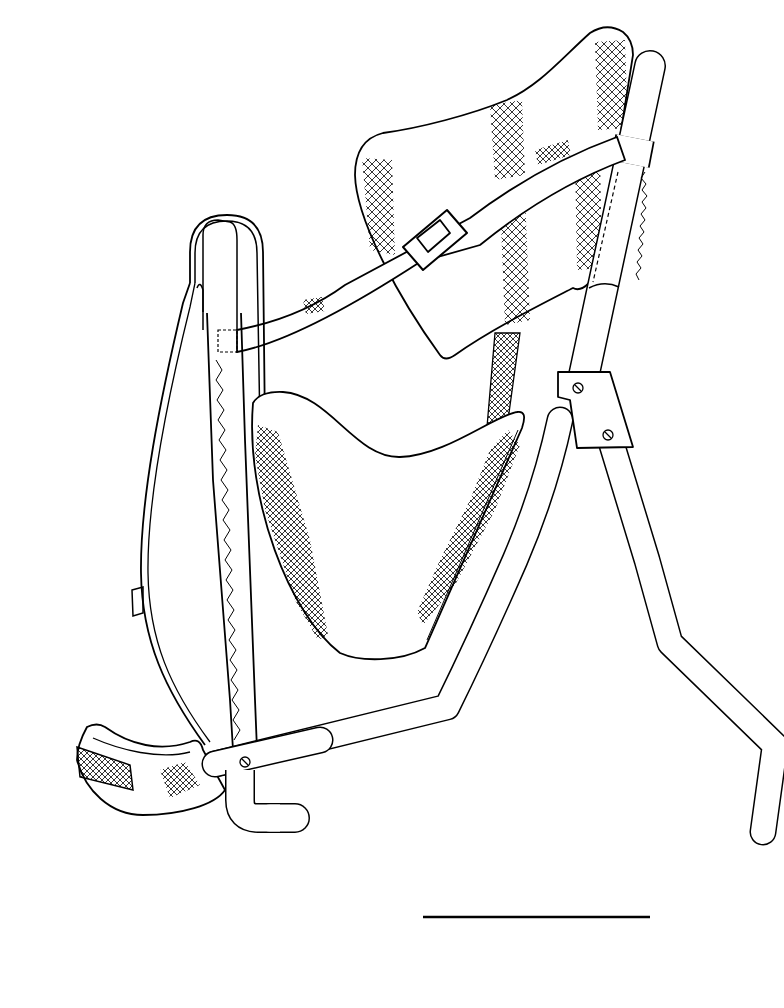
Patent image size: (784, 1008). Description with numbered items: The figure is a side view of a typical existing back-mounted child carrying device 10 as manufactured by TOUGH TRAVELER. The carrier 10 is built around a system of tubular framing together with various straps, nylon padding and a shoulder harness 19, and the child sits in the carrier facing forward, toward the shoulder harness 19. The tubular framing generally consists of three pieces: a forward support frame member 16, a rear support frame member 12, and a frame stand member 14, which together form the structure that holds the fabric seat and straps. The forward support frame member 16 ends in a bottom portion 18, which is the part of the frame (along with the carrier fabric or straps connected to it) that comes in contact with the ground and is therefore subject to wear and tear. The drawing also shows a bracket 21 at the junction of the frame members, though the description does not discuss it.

The back-mounted child carrying device 10 is at (201, 163).
The rear support frame member 12 is at (482, 642).
The frame stand member 14 is at (647, 557).
The forward support frame member 16 is at (240, 681).
The bottom portion 18 is at (272, 817).
The shoulder harness 19 is at (167, 392).
The bracket 21 is at (603, 412).